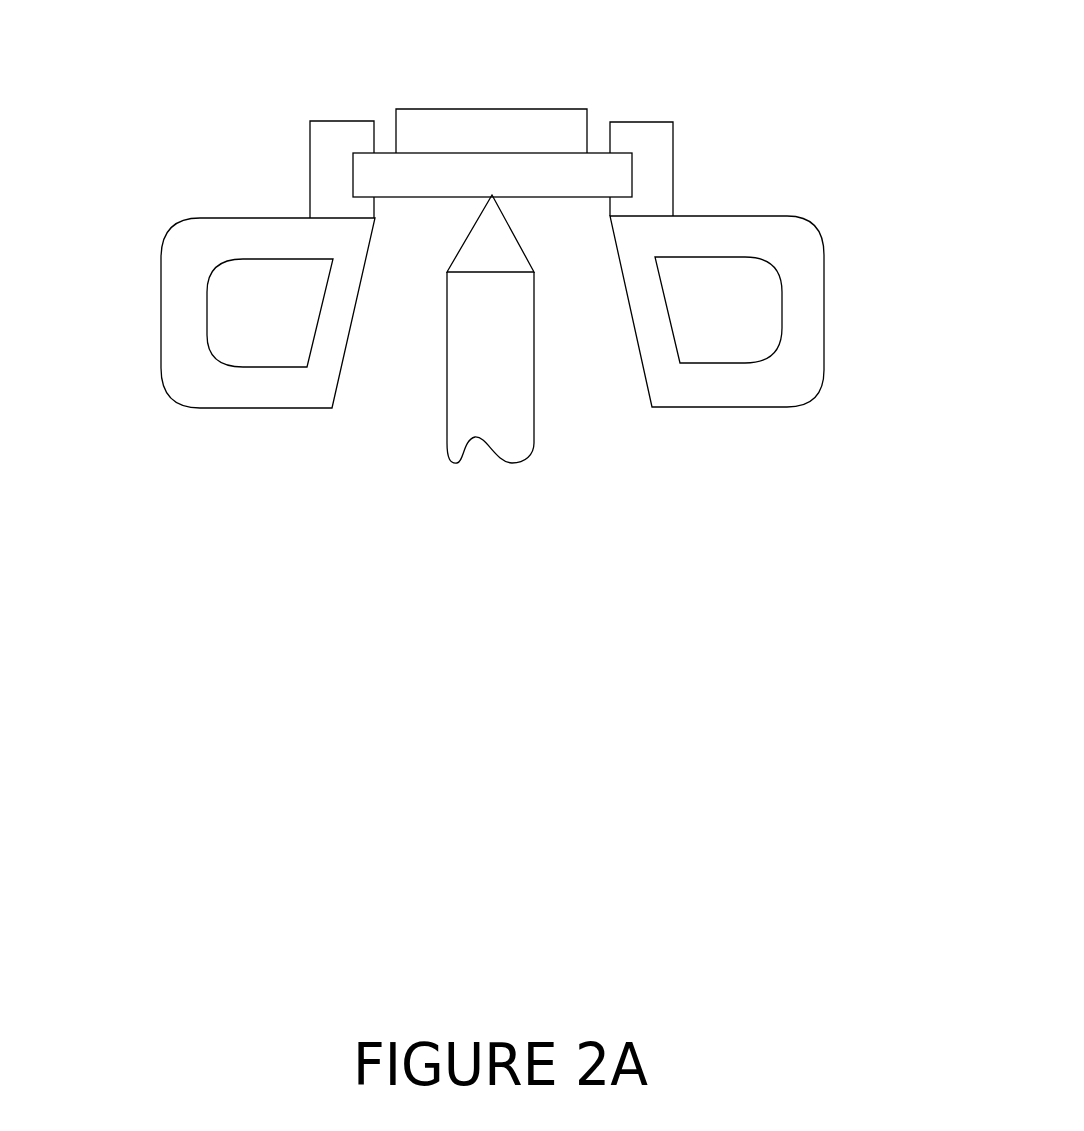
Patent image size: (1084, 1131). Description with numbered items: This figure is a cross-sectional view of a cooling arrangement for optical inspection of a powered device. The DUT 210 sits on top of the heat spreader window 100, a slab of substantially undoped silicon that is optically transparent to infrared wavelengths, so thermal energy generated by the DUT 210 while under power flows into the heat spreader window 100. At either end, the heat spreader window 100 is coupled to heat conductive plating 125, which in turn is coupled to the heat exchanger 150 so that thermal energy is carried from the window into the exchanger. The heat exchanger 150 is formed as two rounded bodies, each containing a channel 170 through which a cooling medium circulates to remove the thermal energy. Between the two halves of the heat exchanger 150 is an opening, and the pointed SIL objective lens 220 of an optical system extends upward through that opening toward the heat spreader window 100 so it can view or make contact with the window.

The heat spreader window 100 is at (395, 197).
The heat conductive plating 125 is at (674, 153).
The heat exchanger 150 is at (161, 300).
The channel 170 is at (289, 325).
The DUT 210 is at (546, 110).
The SIL objective lens 220 is at (523, 243).